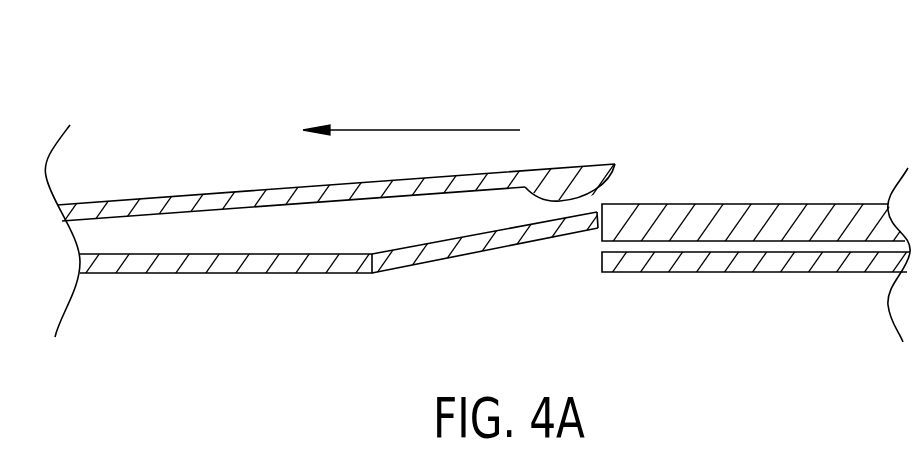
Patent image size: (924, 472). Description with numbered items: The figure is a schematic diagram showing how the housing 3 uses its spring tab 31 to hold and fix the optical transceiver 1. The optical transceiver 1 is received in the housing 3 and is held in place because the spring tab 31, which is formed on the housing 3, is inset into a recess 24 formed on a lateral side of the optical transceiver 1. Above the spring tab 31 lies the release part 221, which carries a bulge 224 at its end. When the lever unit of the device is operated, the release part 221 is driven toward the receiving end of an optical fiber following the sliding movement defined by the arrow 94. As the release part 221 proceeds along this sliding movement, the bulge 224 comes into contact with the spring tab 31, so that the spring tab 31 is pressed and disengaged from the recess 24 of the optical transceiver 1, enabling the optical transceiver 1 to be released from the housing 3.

The optical transceiver 1 is at (712, 186).
The housing 3 is at (250, 296).
The recess 24 is at (590, 240).
The spring tab 31 is at (467, 254).
The arrow 94 is at (475, 130).
The release part 221 is at (267, 195).
The bulge 224 is at (603, 172).